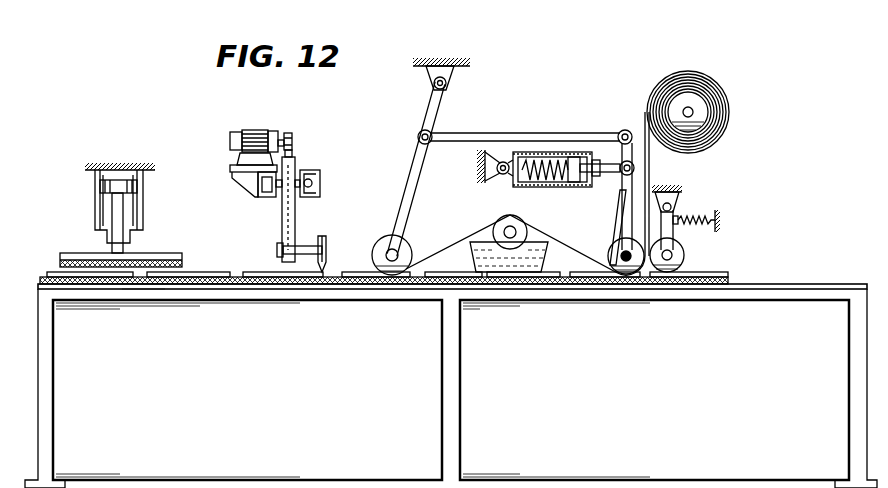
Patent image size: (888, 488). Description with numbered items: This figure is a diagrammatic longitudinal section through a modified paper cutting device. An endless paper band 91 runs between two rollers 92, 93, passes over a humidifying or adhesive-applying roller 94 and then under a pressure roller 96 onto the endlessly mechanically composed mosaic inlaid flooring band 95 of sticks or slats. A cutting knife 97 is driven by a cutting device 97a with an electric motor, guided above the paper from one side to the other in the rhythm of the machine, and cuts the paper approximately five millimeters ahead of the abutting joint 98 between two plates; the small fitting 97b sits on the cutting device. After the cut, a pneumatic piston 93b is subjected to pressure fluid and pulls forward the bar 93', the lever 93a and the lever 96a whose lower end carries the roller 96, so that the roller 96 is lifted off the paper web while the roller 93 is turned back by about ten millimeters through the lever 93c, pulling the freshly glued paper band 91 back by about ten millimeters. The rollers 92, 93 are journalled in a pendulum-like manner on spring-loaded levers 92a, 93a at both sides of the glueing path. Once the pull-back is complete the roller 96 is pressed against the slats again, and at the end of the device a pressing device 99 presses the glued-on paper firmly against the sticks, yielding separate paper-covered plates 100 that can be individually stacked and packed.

The endless paper band 91 is at (251, 275).
The roller 92 is at (685, 256).
The lever 92a is at (682, 211).
The roller 93 is at (601, 256).
The bar 93' is at (525, 124).
The lever 93a is at (615, 231).
The pneumatic piston 93b is at (579, 149).
The lever 93c is at (619, 216).
The humidifying or adhesive-applying roller 94 is at (500, 219).
The mosaic inlaid flooring band 95 is at (723, 283).
The pressure roller 96 is at (385, 244).
The lever 96a is at (405, 191).
The cutting knife 97 is at (325, 233).
The cutting device 97a is at (295, 169).
The fitting 97b is at (290, 141).
The abutting joint 98 is at (325, 289).
The pressing device 99 is at (143, 207).
The paper-covered plates 100 is at (162, 290).